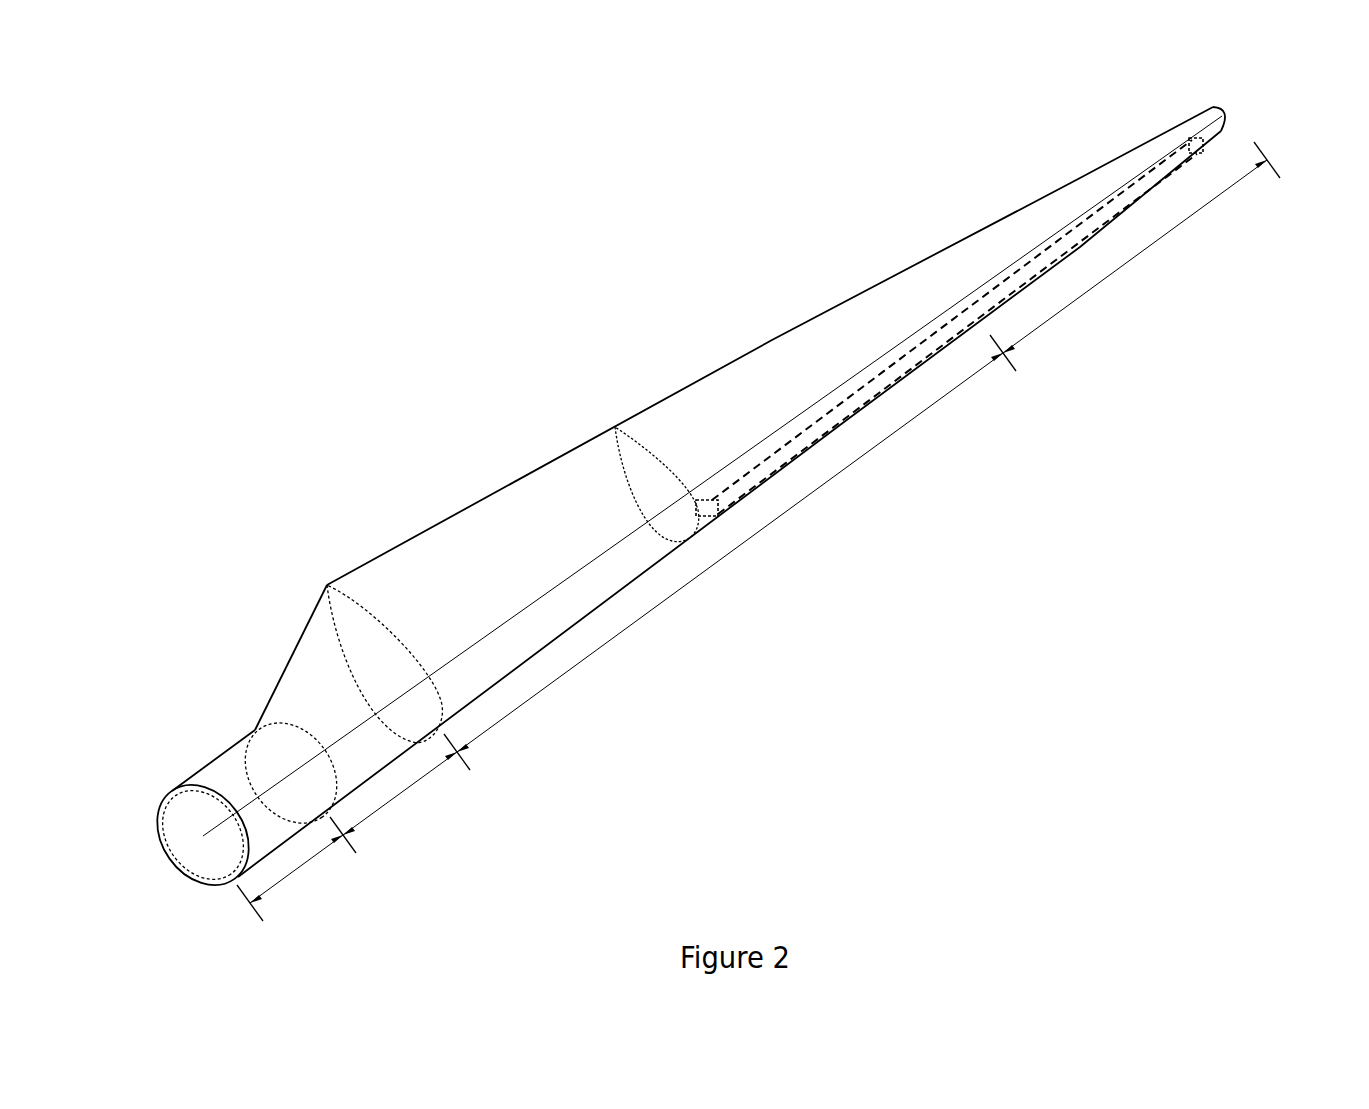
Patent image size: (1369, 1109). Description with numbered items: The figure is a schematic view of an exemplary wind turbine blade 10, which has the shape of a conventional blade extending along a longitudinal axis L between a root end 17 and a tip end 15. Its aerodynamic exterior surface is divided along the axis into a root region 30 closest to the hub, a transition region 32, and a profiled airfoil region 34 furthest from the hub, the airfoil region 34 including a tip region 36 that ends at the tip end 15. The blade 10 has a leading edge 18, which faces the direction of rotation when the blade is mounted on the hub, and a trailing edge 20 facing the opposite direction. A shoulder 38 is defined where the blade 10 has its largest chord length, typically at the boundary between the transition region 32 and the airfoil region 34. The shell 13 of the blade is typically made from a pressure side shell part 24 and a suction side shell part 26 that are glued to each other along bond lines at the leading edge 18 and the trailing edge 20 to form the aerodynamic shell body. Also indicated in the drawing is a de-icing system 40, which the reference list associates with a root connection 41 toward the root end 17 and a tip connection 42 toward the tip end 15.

The wind turbine blade 10 is at (512, 329).
The shell 13 is at (284, 663).
The tip end 15 is at (1223, 112).
The root end 17 is at (173, 813).
The leading edge 18 is at (857, 417).
The trailing edge 20 is at (772, 338).
The pressure side shell part 24 is at (200, 790).
The suction side shell part 26 is at (207, 877).
The root region 30 is at (303, 868).
The transition region 32 is at (410, 787).
The airfoil region 34 is at (680, 590).
The tip region 36 is at (1080, 299).
The shoulder 38 is at (327, 585).
The de-icing system 40 is at (1023, 283).
The root connection 41 is at (717, 513).
The tip connection 42 is at (1197, 155).
The longitudinal axis L is at (188, 872).